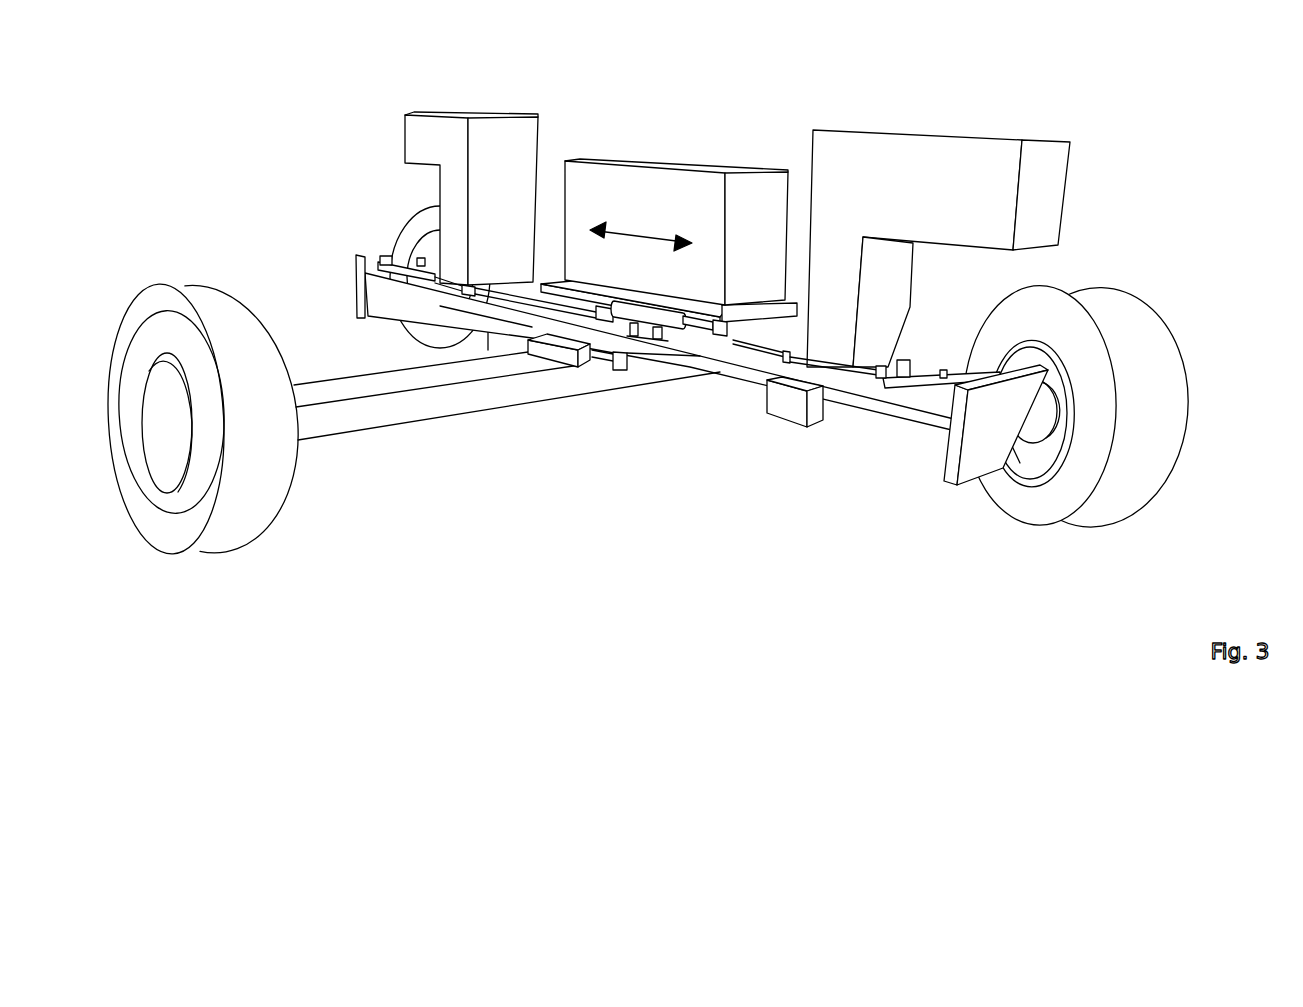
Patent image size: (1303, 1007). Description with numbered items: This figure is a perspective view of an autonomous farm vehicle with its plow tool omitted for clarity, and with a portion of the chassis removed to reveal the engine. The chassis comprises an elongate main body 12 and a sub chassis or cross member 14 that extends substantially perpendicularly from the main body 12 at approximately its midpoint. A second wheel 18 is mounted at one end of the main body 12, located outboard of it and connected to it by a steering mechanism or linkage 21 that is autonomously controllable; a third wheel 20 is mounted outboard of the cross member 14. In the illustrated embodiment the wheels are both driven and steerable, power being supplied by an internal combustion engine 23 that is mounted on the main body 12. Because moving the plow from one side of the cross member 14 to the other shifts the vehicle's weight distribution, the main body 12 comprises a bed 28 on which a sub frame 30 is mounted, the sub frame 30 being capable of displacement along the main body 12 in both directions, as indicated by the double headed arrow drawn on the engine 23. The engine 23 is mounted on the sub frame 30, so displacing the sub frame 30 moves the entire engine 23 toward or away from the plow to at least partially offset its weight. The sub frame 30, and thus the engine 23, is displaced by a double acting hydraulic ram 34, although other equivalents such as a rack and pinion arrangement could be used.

The main body 12 is at (922, 128).
The cross member 14 is at (410, 413).
The second wheel 18 is at (1143, 373).
The third wheel 20 is at (233, 537).
The steering mechanism 21 is at (393, 256).
The internal combustion engine 23 is at (667, 175).
The bed 28 is at (773, 332).
The sub frame 30 is at (743, 318).
The double acting hydraulic ram 34 is at (650, 317).